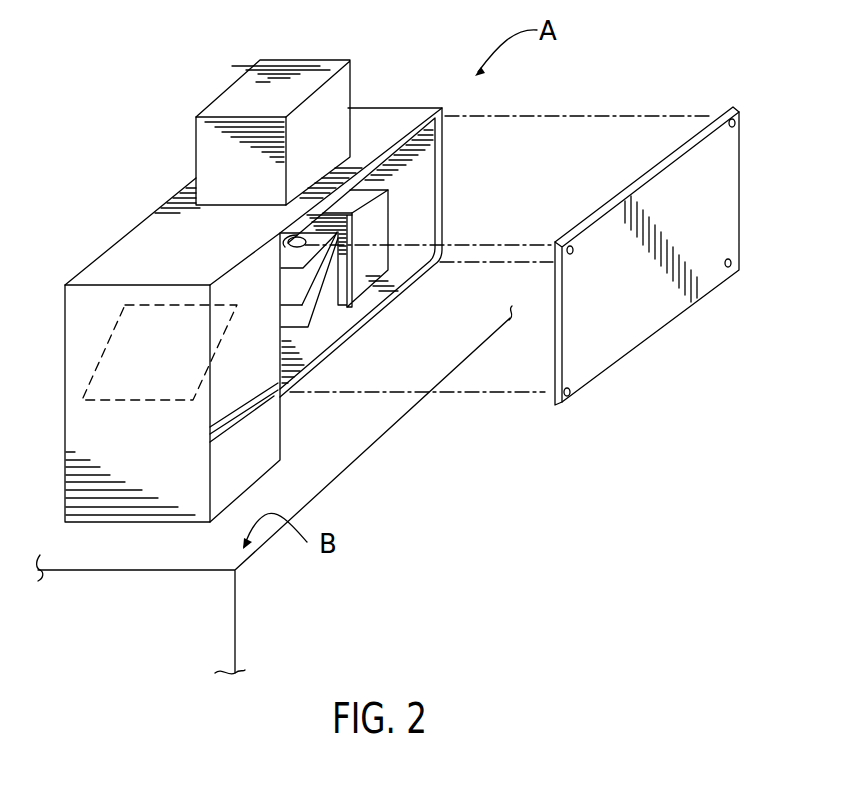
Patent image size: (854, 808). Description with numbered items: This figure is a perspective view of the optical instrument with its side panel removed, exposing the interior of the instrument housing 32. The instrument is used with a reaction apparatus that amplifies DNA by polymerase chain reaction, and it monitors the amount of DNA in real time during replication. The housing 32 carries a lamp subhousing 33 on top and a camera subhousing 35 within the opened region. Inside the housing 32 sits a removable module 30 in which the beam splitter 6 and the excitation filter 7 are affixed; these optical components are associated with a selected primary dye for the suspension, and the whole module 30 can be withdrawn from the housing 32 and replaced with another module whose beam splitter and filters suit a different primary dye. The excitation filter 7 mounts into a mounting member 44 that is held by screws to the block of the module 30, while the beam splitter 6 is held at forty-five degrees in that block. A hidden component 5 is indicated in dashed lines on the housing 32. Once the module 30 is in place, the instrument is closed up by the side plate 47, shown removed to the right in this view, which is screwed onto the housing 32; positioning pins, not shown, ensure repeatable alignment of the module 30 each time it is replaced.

The hidden internal component 5 is at (157, 380).
The beam splitter 6 is at (290, 289).
The excitation filter 7 is at (293, 236).
The module 30 is at (327, 311).
The housing 32 is at (126, 261).
The lamp subhousing 33 is at (208, 141).
The camera subhousing 35 is at (382, 212).
The mounting member 44 is at (290, 253).
The side plate 47 is at (653, 300).